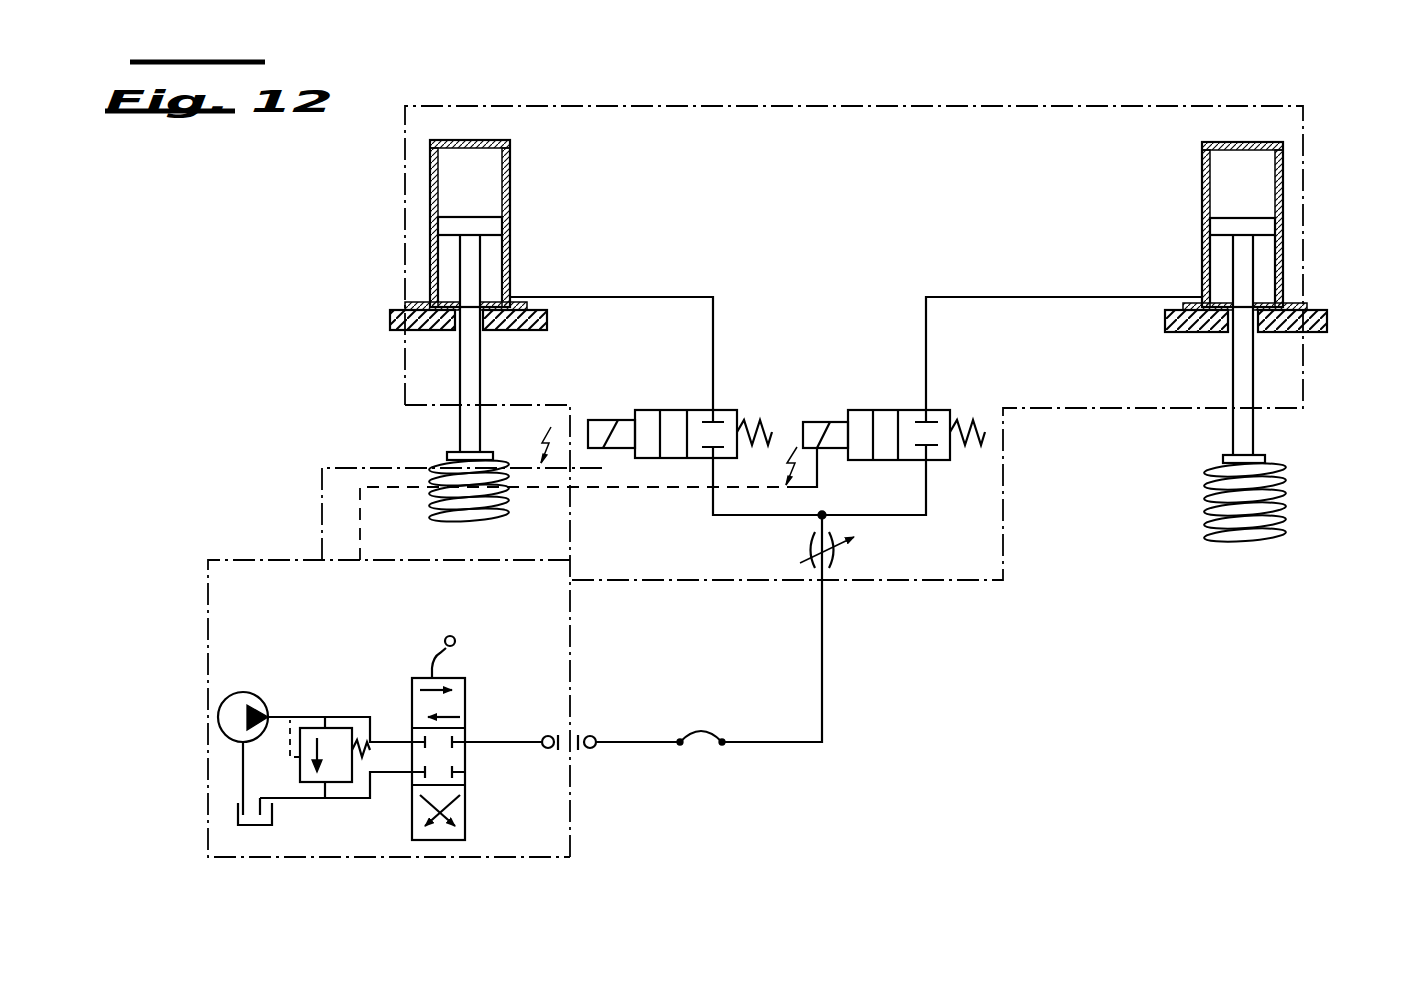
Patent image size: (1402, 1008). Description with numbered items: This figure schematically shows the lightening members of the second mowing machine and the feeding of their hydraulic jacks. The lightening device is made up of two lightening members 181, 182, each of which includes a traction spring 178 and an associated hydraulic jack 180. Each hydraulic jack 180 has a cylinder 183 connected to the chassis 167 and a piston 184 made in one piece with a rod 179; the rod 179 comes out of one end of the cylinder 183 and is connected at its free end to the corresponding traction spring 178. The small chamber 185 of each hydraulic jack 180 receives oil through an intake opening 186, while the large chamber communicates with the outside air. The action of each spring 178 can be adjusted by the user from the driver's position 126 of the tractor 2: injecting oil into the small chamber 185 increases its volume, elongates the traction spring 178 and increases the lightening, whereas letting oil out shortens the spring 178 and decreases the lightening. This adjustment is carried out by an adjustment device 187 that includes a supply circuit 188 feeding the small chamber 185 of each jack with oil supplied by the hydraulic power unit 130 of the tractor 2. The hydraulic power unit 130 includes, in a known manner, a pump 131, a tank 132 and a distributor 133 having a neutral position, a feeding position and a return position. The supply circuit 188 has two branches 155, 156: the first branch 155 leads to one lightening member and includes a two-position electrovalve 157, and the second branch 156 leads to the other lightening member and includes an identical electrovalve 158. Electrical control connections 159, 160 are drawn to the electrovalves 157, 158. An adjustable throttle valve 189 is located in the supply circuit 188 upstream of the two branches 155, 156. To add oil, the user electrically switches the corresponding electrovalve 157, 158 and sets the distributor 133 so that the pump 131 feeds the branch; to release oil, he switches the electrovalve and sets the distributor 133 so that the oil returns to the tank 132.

The tractor 2 is at (206, 557).
The driver's position 126 is at (207, 590).
The hydraulic power unit 130 is at (522, 824).
The pump 131 is at (263, 677).
The tank 132 is at (272, 825).
The distributor 133 is at (466, 677).
The first branch 155 is at (762, 517).
The second branch 156 is at (888, 517).
The electrovalve 157 is at (765, 390).
The electrovalve 158 is at (980, 390).
The electrical control line 159 is at (338, 467).
The electrical control line 160 is at (360, 511).
The chassis 167 is at (397, 321).
The traction spring 178 is at (447, 510).
The rod 179 is at (472, 373).
The hydraulic jack 180 is at (433, 175).
The lightening member 181 is at (516, 162).
The lightening member 182 is at (1200, 166).
The cylinder 183 is at (480, 139).
The piston 184 is at (472, 226).
The small chamber 185 is at (447, 258).
The intake opening 186 is at (508, 297).
The adjustment device 187 is at (992, 582).
The supply circuit 188 is at (823, 712).
The adjustable throttle valve 189 is at (833, 560).